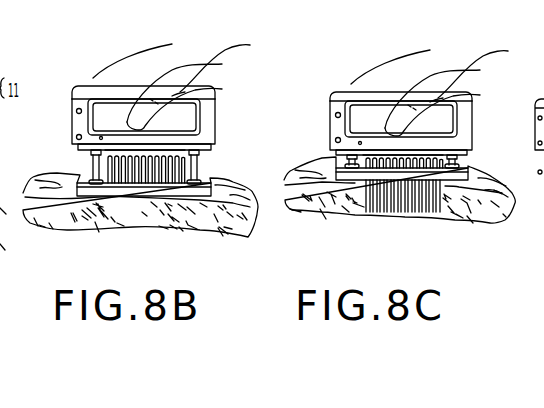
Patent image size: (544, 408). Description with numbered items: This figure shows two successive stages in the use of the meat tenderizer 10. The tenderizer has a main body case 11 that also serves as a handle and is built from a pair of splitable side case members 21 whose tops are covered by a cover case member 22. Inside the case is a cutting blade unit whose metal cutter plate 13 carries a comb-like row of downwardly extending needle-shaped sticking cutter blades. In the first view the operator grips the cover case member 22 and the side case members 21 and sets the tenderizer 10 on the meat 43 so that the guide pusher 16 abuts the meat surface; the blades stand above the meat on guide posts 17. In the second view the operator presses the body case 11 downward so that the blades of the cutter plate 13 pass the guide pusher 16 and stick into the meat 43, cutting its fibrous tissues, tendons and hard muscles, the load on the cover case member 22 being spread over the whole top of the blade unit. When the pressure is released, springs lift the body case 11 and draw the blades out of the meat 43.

In FIG. 8B, the meat tenderizer 10 is at (62, 126).
In FIG. 8B, the main body case 11 is at (257, 72).
In FIG. 8C, the main body case 11 is at (510, 73).
In FIG. 8B, the cutter plate 13 is at (108, 152).
In FIG. 8B, the guide pusher 16 is at (208, 185).
In FIG. 8C, the guide pusher 16 is at (462, 168).
In FIG. 8B, the guide post 17 is at (198, 160).
In FIG. 8B, the side case member 21 is at (216, 111).
In FIG. 8C, the side case member 21 is at (474, 121).
In FIG. 8B, the cover case member 22 is at (209, 90).
In FIG. 8C, the cover case member 22 is at (455, 99).
In FIG. 8B, the meat 43 is at (250, 223).
In FIG. 8C, the meat 43 is at (347, 210).